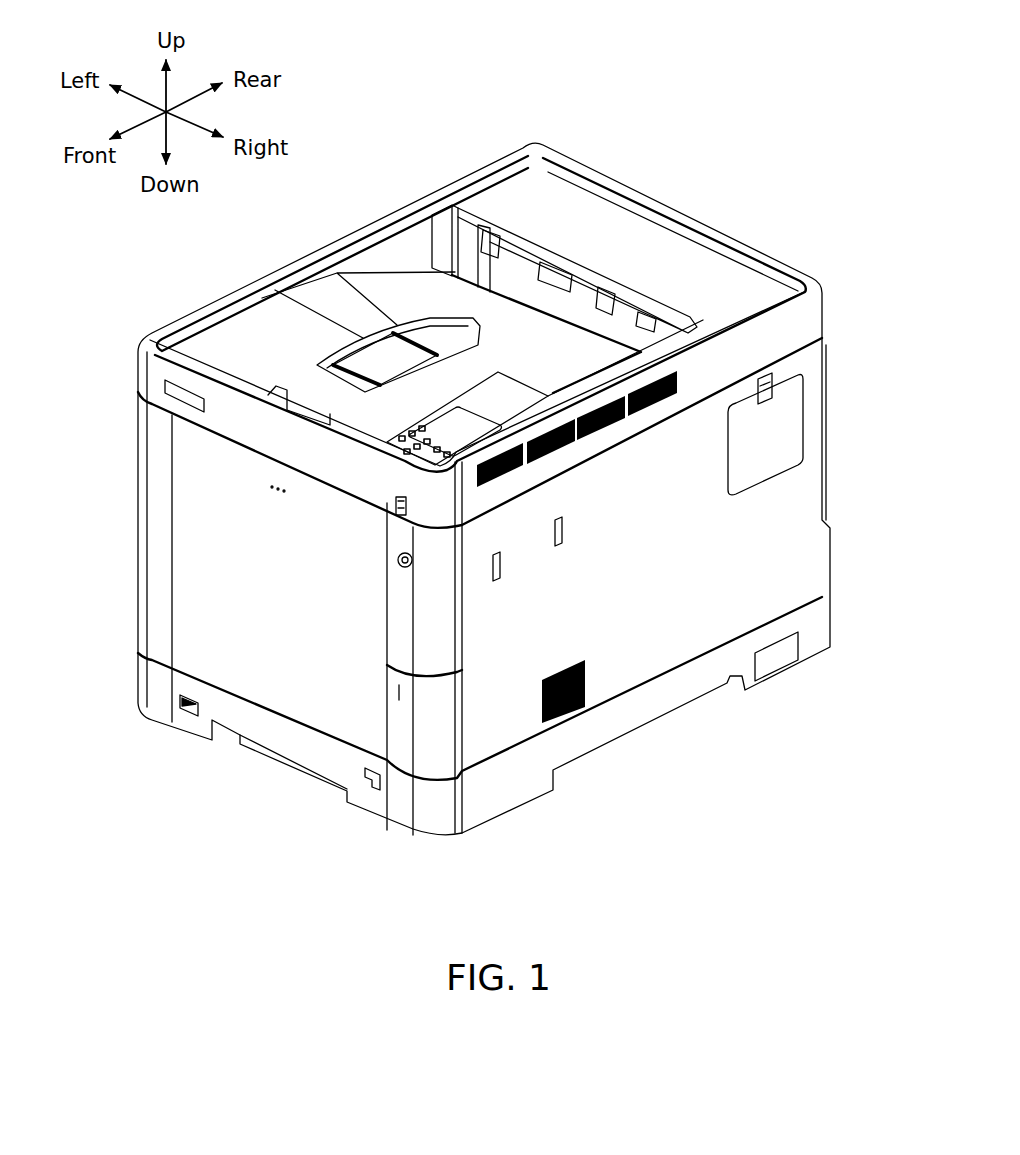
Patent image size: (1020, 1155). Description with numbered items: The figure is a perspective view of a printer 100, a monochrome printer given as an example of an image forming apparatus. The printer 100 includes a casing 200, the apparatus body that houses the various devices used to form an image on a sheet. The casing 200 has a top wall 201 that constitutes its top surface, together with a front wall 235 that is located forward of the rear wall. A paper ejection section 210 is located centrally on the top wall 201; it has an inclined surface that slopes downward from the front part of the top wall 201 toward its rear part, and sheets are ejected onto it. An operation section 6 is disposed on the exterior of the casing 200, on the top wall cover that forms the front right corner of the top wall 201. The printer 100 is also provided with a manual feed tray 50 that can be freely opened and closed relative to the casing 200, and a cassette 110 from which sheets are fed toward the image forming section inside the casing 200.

The printer 100 is at (823, 201).
The casing 200 is at (826, 324).
The top wall 201 is at (557, 200).
The paper ejection section 210 is at (415, 290).
The operation section 6 is at (490, 406).
The front wall 235 is at (162, 392).
The manual feed tray 50 is at (197, 543).
The cassette 110 is at (295, 738).